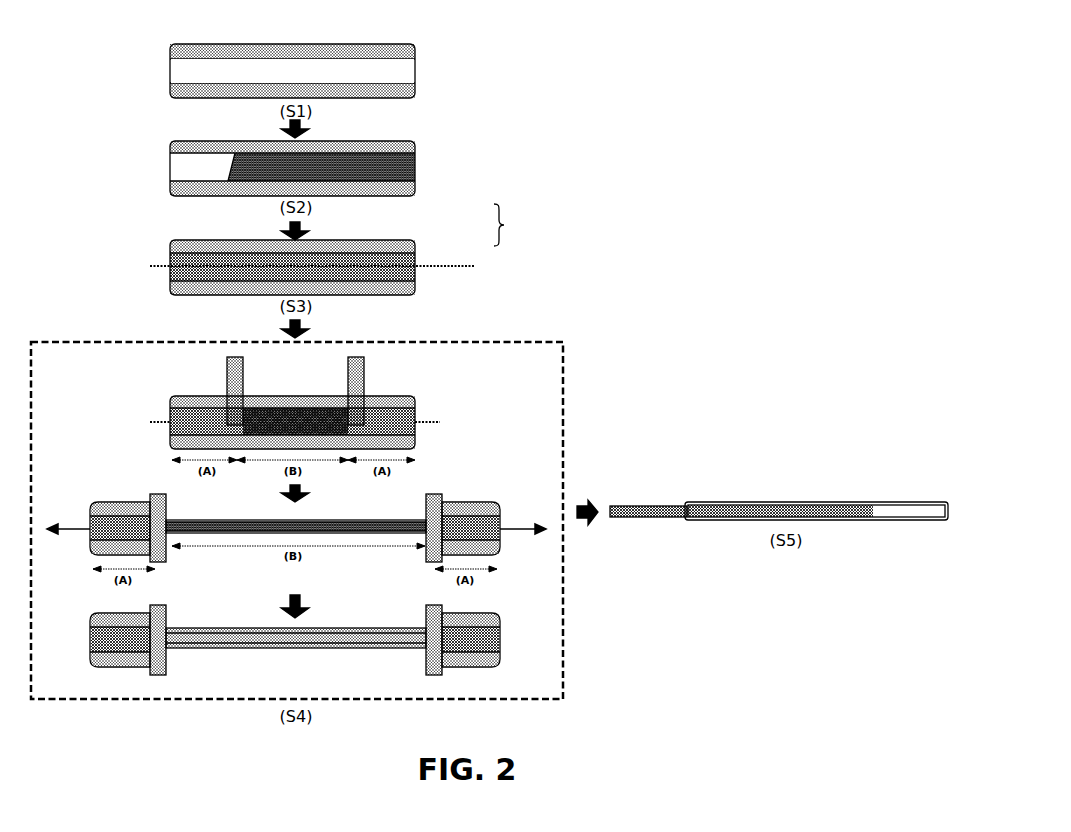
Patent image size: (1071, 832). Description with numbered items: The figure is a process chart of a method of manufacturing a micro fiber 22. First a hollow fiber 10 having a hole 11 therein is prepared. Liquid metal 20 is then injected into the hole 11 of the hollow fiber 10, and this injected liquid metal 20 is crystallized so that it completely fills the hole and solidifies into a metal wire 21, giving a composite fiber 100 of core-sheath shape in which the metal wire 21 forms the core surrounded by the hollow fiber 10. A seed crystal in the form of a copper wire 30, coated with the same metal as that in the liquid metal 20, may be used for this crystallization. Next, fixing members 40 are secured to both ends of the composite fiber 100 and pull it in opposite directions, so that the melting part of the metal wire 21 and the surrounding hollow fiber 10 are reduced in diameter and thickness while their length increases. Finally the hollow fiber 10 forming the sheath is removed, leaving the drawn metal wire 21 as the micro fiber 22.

The hollow fiber 10 is at (415, 49).
The hole 11 is at (400, 72).
The liquid metal 20 is at (406, 172).
The metal wire 21 is at (402, 271).
The copper wire 30 is at (447, 270).
The fixing member 40 is at (233, 365).
The composite fiber 100 is at (518, 225).
The micro fiber 22 is at (640, 514).